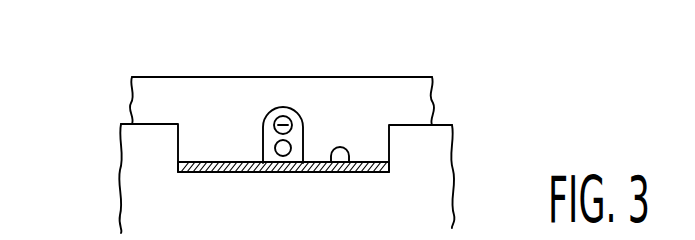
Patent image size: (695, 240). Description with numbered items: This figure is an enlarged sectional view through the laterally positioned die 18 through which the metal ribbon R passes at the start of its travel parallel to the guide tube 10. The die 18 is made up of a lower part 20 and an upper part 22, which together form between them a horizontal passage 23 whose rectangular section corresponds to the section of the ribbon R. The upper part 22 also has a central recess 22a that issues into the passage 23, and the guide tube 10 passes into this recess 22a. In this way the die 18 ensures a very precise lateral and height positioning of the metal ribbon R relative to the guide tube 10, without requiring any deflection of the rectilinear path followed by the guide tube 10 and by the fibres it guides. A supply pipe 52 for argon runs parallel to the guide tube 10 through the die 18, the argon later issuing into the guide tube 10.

The die 18 is at (122, 110).
The guide tube 10 is at (274, 124).
The central recess 22a is at (303, 130).
The upper part 22 is at (420, 89).
The metal ribbon R is at (373, 163).
The lower part 20 is at (140, 190).
The supply pipe 52 is at (283, 157).
The horizontal passage 23 is at (332, 171).